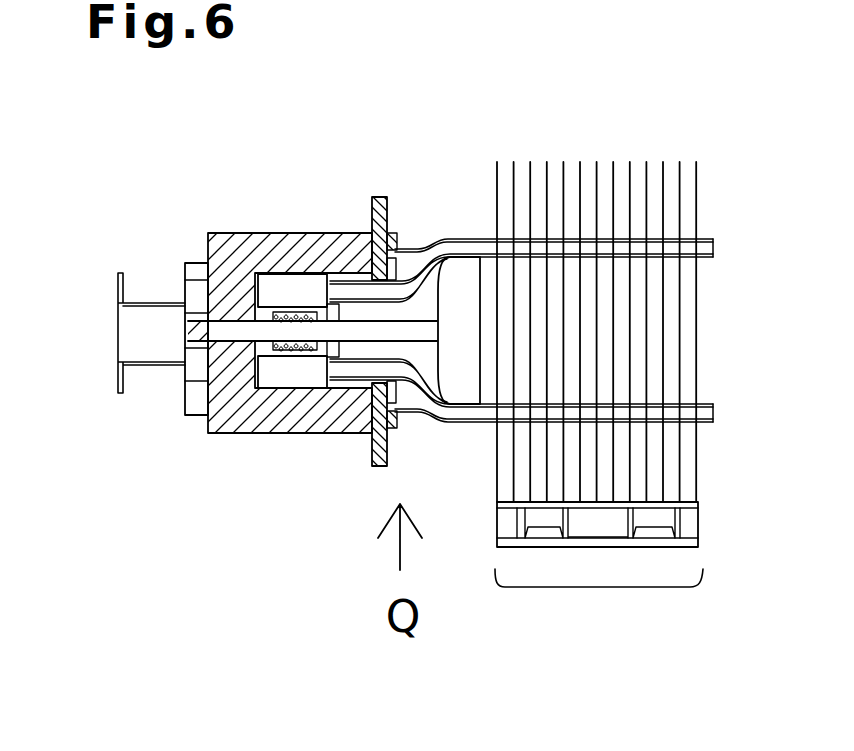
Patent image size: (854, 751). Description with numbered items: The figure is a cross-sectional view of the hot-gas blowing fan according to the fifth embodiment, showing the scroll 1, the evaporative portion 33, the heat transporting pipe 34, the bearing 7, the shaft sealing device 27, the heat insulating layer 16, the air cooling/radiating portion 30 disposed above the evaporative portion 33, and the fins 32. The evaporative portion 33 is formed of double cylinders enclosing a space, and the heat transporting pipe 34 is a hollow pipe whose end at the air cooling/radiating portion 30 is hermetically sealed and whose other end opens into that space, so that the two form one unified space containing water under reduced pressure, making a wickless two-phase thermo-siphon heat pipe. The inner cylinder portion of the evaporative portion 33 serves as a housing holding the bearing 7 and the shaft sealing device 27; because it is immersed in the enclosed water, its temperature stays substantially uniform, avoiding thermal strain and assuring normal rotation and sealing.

The scroll 1 is at (187, 262).
The bearing 7 is at (322, 347).
The heat insulating layer 16 is at (210, 427).
The shaft sealing device 27 is at (261, 388).
The air cooling/radiating portion 30 is at (600, 588).
The fins 32 is at (540, 185).
The evaporative portion 33 is at (300, 281).
The heat transporting pipe 34 is at (452, 237).